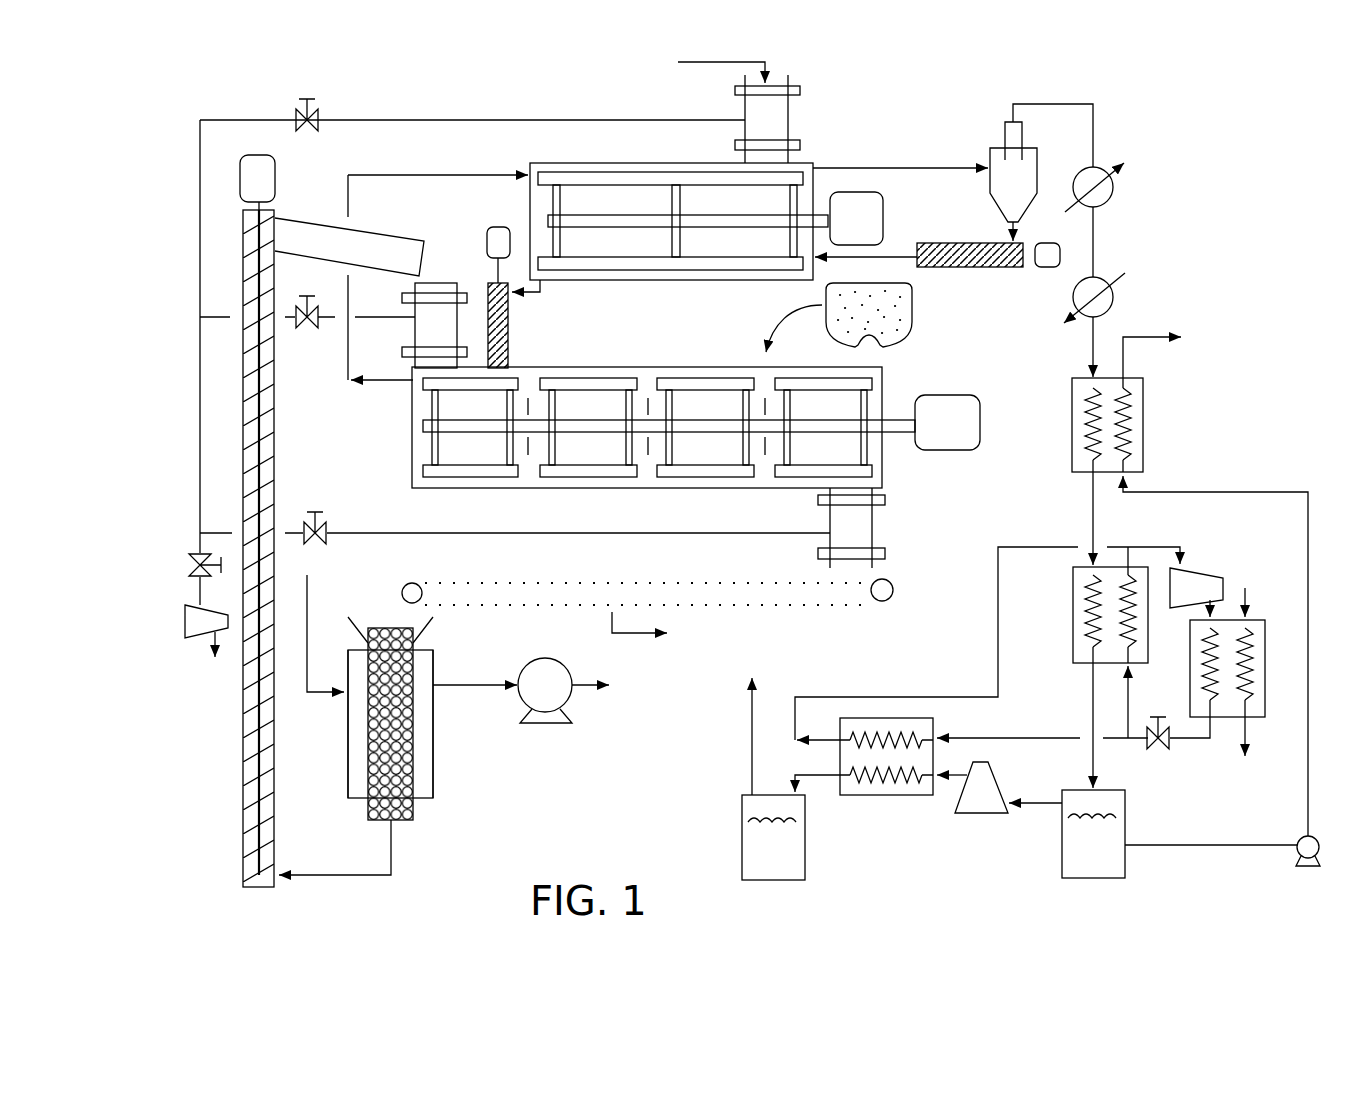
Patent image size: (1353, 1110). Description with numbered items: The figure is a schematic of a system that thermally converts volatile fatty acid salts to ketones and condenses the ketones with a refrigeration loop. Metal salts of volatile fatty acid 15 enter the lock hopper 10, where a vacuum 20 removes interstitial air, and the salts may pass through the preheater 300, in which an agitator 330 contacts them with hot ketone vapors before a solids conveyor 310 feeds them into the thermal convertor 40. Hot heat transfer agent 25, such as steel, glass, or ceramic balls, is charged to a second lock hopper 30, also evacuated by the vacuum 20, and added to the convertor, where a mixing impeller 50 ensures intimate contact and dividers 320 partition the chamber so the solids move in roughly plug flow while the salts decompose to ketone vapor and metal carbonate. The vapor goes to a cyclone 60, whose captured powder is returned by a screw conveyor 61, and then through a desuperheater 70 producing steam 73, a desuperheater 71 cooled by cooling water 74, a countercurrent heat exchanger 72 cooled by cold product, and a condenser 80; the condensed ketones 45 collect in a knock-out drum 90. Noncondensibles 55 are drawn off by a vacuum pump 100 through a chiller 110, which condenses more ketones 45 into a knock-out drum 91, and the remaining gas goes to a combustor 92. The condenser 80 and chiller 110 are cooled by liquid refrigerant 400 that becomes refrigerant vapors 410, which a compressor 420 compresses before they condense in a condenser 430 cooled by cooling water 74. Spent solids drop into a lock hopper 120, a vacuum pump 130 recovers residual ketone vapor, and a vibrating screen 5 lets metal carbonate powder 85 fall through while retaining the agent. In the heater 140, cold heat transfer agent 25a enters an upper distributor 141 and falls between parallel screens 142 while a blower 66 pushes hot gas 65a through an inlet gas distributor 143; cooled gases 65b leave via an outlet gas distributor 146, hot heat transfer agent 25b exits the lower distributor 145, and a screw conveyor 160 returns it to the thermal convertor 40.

The vibrating screen 5 is at (580, 580).
The lock hopper 10 is at (790, 128).
The metal salts of volatile fatty acid 15 is at (706, 69).
The vacuum 20 is at (447, 120).
The heat transfer agent 25 is at (437, 282).
The cold heat transfer agent 25a is at (387, 620).
The hot heat transfer agent 25b is at (303, 876).
The lock hopper 30 is at (413, 325).
The thermal convertor 40 is at (600, 364).
The condensed ketones 45 is at (782, 845).
The mixing impeller 50 is at (878, 371).
The noncondensibles 55 is at (1045, 808).
The cyclone 60 is at (990, 152).
The screw conveyor 61 is at (925, 243).
The hot gas 65a is at (316, 621).
The cooled gases 65b is at (450, 686).
The blower 66 is at (548, 722).
The desuperheater 70 is at (1112, 195).
The desuperheater 71 is at (1112, 305).
The countercurrent heat exchanger 72 is at (1143, 448).
The steam 73 is at (1107, 176).
The cooling water 74 is at (1162, 433).
The condenser 80 is at (1073, 615).
The metal carbonate powder 85 is at (655, 627).
The knock-out drum 90 is at (1128, 800).
The knock-out drum 91 is at (742, 800).
The combustor 92 is at (752, 724).
The vacuum pump 100 is at (990, 815).
The chiller 110 is at (843, 797).
The lock hopper 120 is at (875, 520).
The vacuum pump 130 is at (184, 622).
The heater 140 is at (433, 800).
The upper distributor 141 is at (433, 628).
The parallel screens 142 is at (370, 700).
The inlet gas distributor 143 is at (352, 778).
The lower distributor 145 is at (405, 822).
The outlet gas distributor 146 is at (425, 752).
The screw conveyor 160 is at (242, 848).
The preheater 300 is at (608, 280).
The solids conveyor 310 is at (510, 350).
The dividers 320 is at (912, 330).
The agitator 330 is at (641, 162).
The liquid refrigerant 400 is at (998, 738).
The refrigerant vapors 410 is at (1070, 545).
The compressor 420 is at (1195, 565).
The condenser 430 is at (1250, 720).